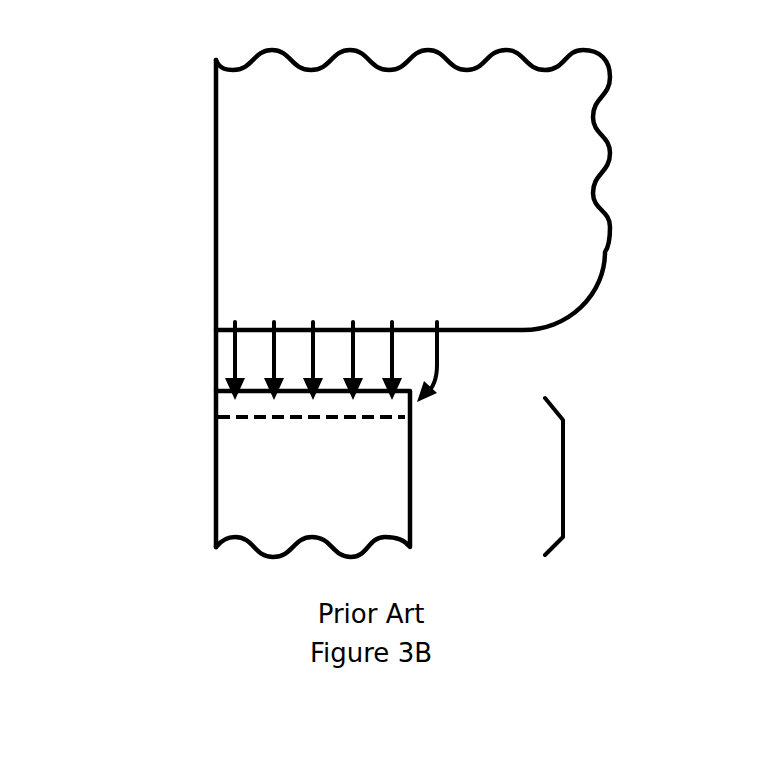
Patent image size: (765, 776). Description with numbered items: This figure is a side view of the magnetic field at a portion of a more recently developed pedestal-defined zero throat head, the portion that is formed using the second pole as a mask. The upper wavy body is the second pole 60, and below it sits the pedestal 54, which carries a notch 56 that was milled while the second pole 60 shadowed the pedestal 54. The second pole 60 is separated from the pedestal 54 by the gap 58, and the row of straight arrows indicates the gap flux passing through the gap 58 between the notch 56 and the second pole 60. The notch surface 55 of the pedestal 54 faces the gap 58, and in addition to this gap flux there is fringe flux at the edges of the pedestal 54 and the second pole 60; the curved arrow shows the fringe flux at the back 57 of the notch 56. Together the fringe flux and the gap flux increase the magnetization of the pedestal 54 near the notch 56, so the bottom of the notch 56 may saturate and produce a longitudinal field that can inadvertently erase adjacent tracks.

The second pole (P2) 60 is at (216, 253).
The gap 58 is at (216, 372).
The back of the notch 57 is at (410, 407).
The lower block / layer 55 is at (216, 400).
The notch 56 is at (130, 420).
The pedestal 54 is at (563, 477).